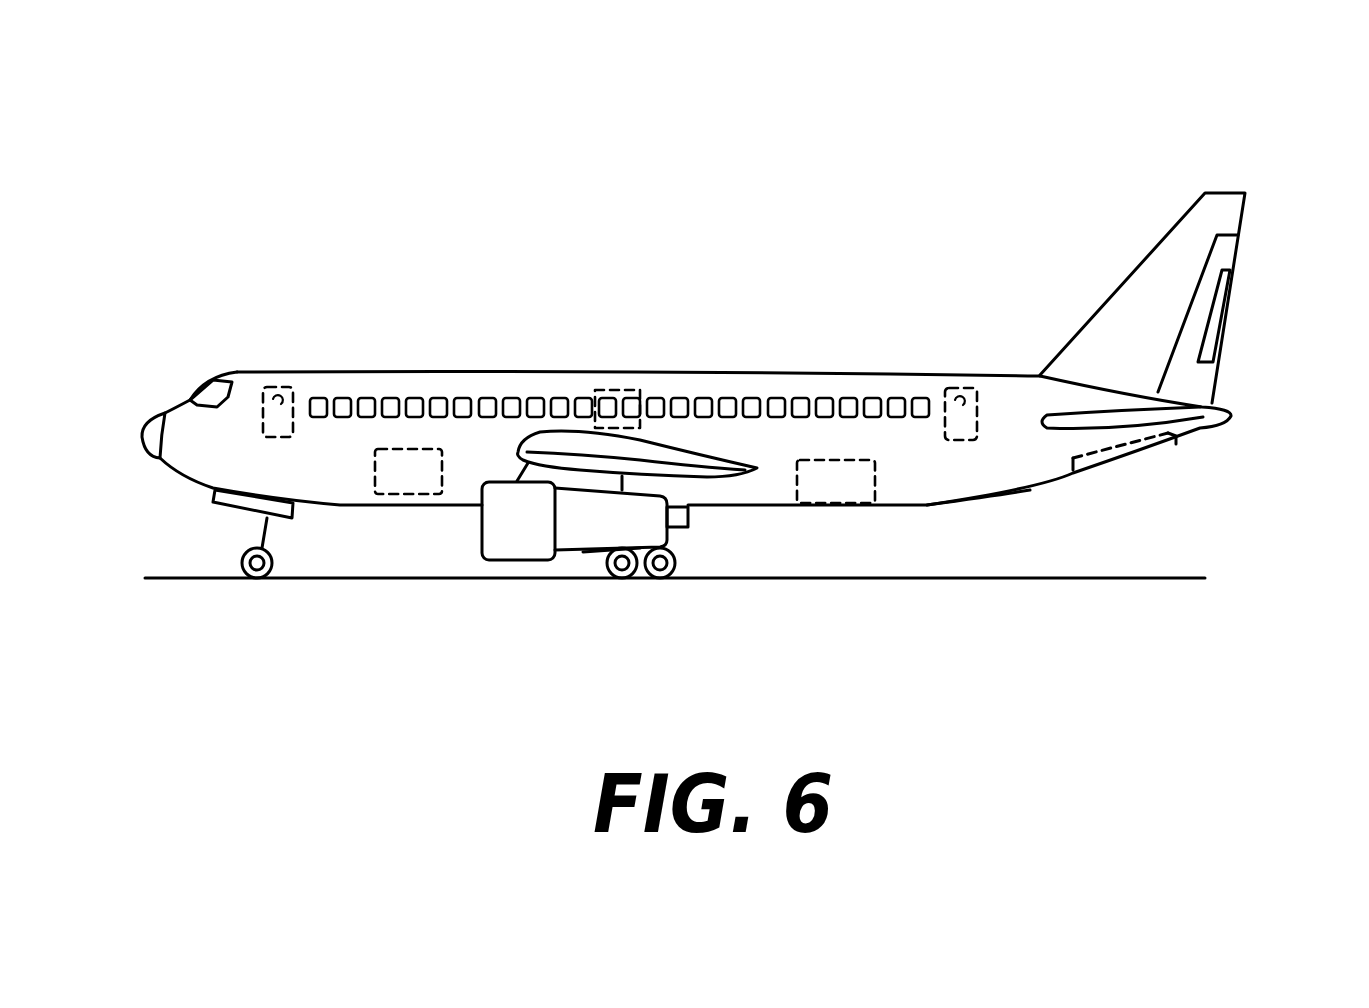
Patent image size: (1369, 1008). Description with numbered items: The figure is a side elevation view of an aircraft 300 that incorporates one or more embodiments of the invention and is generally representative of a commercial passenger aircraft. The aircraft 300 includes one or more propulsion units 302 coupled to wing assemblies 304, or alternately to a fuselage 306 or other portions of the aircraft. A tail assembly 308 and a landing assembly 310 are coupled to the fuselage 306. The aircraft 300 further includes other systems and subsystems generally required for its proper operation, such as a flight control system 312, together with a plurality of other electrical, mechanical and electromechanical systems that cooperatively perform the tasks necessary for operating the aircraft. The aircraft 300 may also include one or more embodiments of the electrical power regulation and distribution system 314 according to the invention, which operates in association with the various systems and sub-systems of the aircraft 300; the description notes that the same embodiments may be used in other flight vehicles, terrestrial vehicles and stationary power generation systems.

The aircraft 300 is at (726, 360).
The propulsion unit 302 is at (583, 553).
The wing assembly 304 is at (717, 477).
The fuselage 306 is at (668, 374).
The tail assembly 308 is at (1253, 372).
The landing assembly 310 is at (248, 579).
The flight control system 312 is at (192, 412).
The electrical power regulation and distribution system 314 is at (968, 485).